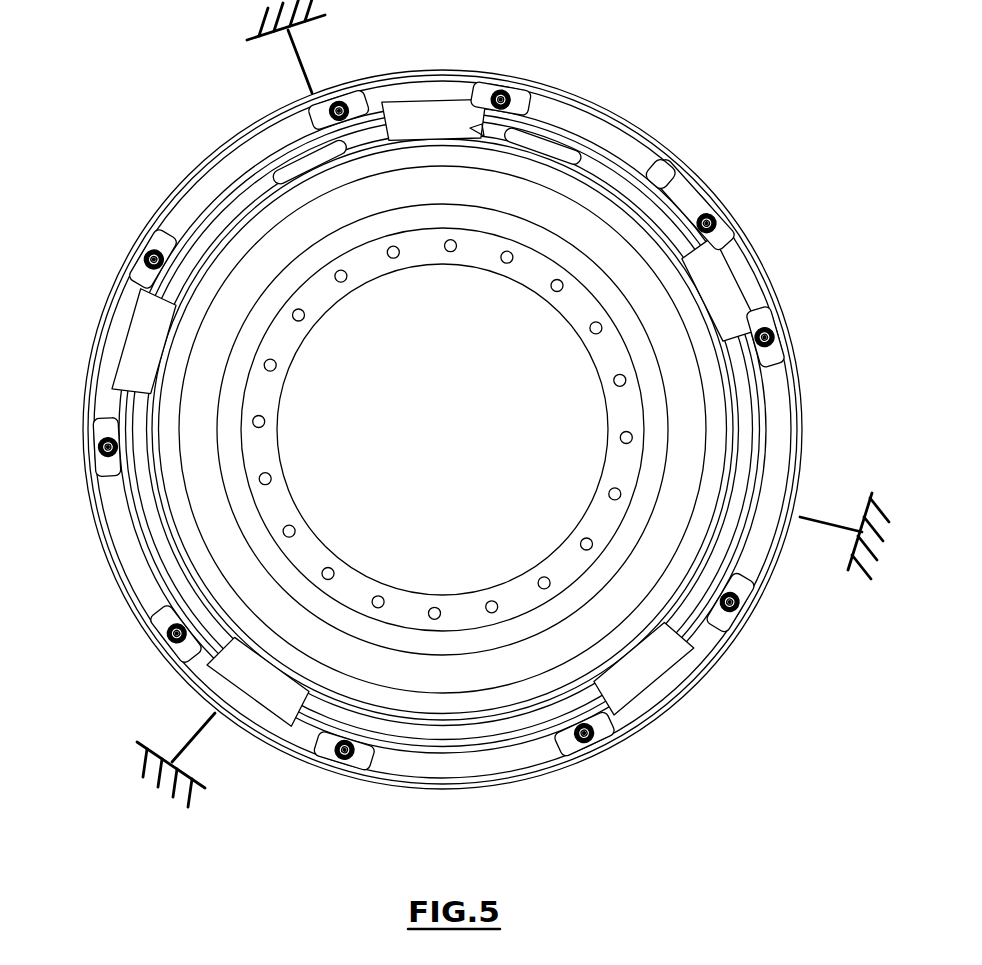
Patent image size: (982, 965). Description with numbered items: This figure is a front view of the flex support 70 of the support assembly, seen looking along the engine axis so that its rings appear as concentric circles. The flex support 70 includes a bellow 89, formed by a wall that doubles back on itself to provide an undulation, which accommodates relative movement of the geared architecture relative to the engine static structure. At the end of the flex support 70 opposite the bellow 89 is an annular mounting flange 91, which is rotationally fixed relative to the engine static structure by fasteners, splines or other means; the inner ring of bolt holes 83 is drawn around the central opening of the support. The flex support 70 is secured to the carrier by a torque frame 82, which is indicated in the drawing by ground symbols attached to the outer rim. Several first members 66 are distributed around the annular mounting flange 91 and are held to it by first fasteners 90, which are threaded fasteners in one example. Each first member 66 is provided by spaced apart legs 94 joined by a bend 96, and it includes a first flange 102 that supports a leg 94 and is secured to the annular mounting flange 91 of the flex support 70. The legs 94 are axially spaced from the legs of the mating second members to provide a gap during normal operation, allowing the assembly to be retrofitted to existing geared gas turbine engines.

The first member 66 is at (436, 78).
The flex support 70 is at (616, 106).
The torque frame 82 is at (318, 66).
The bolt holes 83 is at (303, 321).
The bellow 89 is at (265, 250).
The first fasteners 90 is at (772, 324).
The annular mounting flange 91 is at (292, 102).
The legs 94 is at (467, 100).
The bend 96 is at (472, 128).
The first flange 102 is at (668, 160).